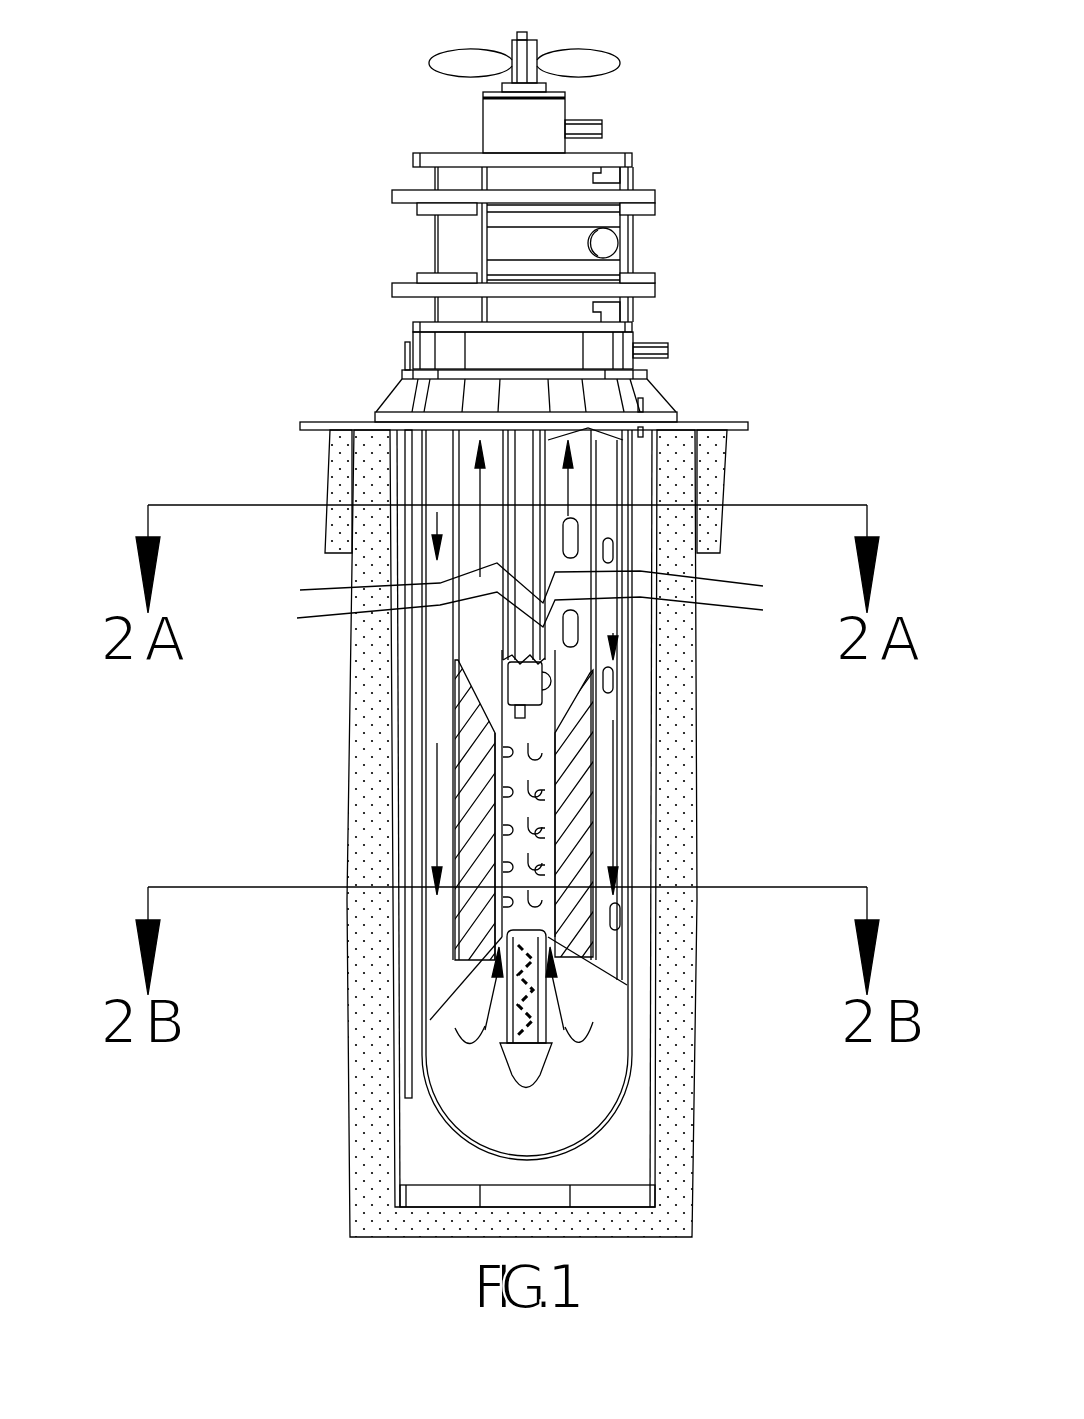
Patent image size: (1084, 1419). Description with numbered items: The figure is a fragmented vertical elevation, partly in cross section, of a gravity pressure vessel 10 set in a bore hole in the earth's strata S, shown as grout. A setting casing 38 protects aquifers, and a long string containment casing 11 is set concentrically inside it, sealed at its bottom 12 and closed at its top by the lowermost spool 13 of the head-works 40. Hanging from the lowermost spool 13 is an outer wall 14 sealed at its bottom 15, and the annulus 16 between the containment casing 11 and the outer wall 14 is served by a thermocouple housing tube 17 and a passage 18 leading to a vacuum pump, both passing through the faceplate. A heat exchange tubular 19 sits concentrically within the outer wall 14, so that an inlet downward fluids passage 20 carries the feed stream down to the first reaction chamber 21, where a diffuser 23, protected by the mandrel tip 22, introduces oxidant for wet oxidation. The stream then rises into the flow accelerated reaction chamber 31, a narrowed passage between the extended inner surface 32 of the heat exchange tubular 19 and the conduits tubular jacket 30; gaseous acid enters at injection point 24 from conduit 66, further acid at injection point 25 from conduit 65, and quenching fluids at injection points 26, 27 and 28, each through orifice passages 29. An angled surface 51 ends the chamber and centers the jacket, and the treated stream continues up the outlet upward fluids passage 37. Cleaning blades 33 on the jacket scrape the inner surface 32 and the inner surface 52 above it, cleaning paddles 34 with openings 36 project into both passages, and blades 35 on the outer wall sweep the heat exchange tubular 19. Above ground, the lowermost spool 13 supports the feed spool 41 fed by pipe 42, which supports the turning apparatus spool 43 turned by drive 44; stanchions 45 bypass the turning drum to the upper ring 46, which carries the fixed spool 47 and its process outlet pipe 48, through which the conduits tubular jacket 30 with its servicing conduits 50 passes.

The gravity pressure vessel 10 is at (195, 1075).
The long string containment casing 11 is at (395, 697).
The bottom of containment casing 12 is at (660, 1152).
The lowermost spool 13 is at (677, 417).
The outer wall 14 is at (420, 738).
The bottom of outer wall 15 is at (440, 1190).
The annulus 16 is at (657, 990).
The thermocouple housing tube 17 is at (407, 340).
The passage 18 is at (647, 373).
The heat exchange tubular 19 is at (627, 845).
The inlet downward fluids passage 20 is at (437, 562).
The first reaction chamber 21 is at (447, 1130).
The feed conduits tubular mandrel tip 22 is at (634, 1135).
The diffuser 23 is at (625, 1040).
The injection point 24 is at (457, 962).
The injection point 25 is at (457, 925).
The injection point 26 is at (455, 875).
The injection point 27 is at (455, 840).
The injection point 28 is at (455, 790).
The orifice passages 29 is at (545, 755).
The conduits tubular jacket 30 is at (553, 83).
The flow accelerated reaction chamber 31 is at (560, 825).
The extended inner surface 32 is at (503, 790).
The cleaning blades 33 is at (503, 752).
The cleaning paddles 34 is at (628, 665).
The blades 35 is at (490, 985).
The openings 36 is at (580, 543).
The outlet upward fluids passage 37 is at (297, 618).
The setting casing 38 is at (352, 472).
The head-works 40 is at (375, 235).
The feed spool 41 is at (508, 330).
The pipe 42 is at (668, 350).
The turning apparatus spool 43 is at (550, 260).
The drive 44 is at (615, 243).
The stanchions 45 is at (435, 245).
The upper ring 46 is at (435, 155).
The fixed spool 47 is at (483, 118).
The process outlet pipe 48 is at (602, 130).
The servicing conduits 50 is at (468, 62).
The angled surface 51 is at (462, 668).
The inner surface 52 is at (420, 522).
The conduit 65 is at (503, 895).
The conduit 66 is at (505, 940).
The earth's strata S is at (697, 1088).